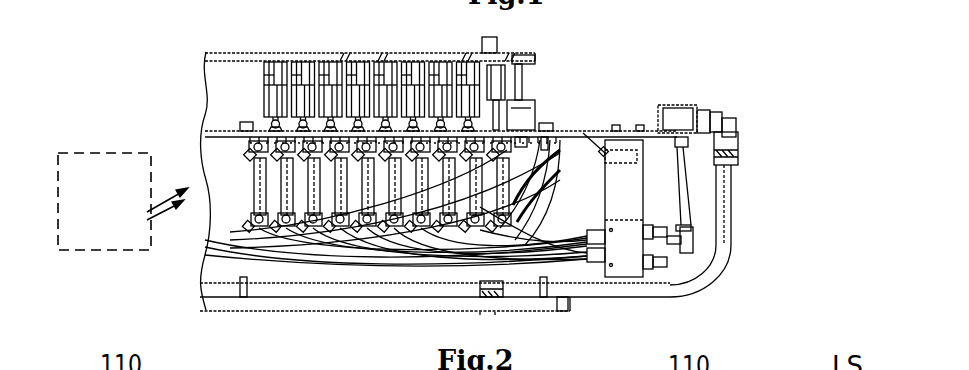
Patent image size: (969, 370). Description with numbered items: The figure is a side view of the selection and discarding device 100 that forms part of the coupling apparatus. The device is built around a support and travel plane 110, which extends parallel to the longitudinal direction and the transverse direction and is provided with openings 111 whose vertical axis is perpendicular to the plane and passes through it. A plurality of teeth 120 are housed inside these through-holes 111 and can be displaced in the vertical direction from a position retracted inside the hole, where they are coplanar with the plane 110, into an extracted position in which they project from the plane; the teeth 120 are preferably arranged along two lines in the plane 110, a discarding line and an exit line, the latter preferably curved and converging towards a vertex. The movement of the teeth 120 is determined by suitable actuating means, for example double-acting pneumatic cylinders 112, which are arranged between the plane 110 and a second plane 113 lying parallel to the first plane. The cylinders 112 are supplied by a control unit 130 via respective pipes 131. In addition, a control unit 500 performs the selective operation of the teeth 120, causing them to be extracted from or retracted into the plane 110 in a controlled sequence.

The selection and discarding device 100 is at (690, 68).
The support and travel plane 110 is at (243, 57).
The openings 111 is at (365, 58).
The double-acting pneumatic cylinders 112 is at (500, 85).
The second plane 113 is at (222, 137).
The teeth 120 is at (368, 255).
The control unit 130 is at (630, 202).
The pipes 131 is at (558, 152).
The control unit 500 is at (135, 200).